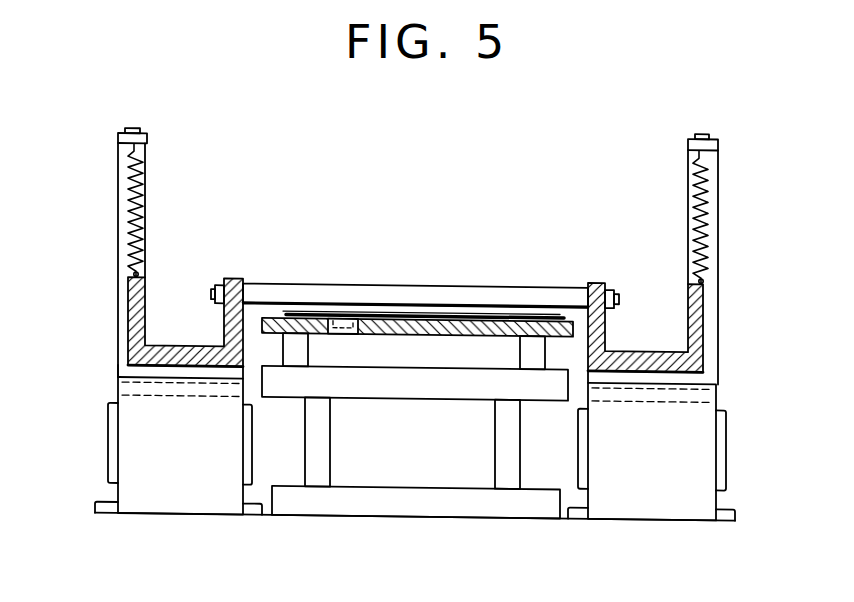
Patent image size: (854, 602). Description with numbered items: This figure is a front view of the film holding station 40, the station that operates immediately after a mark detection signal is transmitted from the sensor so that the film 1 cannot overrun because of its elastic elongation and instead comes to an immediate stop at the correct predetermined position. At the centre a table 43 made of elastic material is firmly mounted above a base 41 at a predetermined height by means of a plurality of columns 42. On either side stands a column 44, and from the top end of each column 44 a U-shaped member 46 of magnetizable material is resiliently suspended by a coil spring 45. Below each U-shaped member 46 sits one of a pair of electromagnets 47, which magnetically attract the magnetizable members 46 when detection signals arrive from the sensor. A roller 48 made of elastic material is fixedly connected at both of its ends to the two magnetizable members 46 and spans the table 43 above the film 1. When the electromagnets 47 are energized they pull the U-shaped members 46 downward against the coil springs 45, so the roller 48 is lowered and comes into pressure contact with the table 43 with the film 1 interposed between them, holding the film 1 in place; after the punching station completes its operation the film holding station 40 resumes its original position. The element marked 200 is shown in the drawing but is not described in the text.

The film 1 is at (545, 312).
The film holding station 40 is at (395, 268).
The base 41 is at (468, 397).
The columns 42 is at (520, 352).
The table 43 is at (415, 330).
The columns 44 is at (144, 209).
The coil springs 45 is at (142, 179).
The U-shaped members 46 is at (134, 352).
The electromagnets 47 is at (192, 470).
The roller 48 is at (470, 290).
The detector element 200 is at (350, 326).